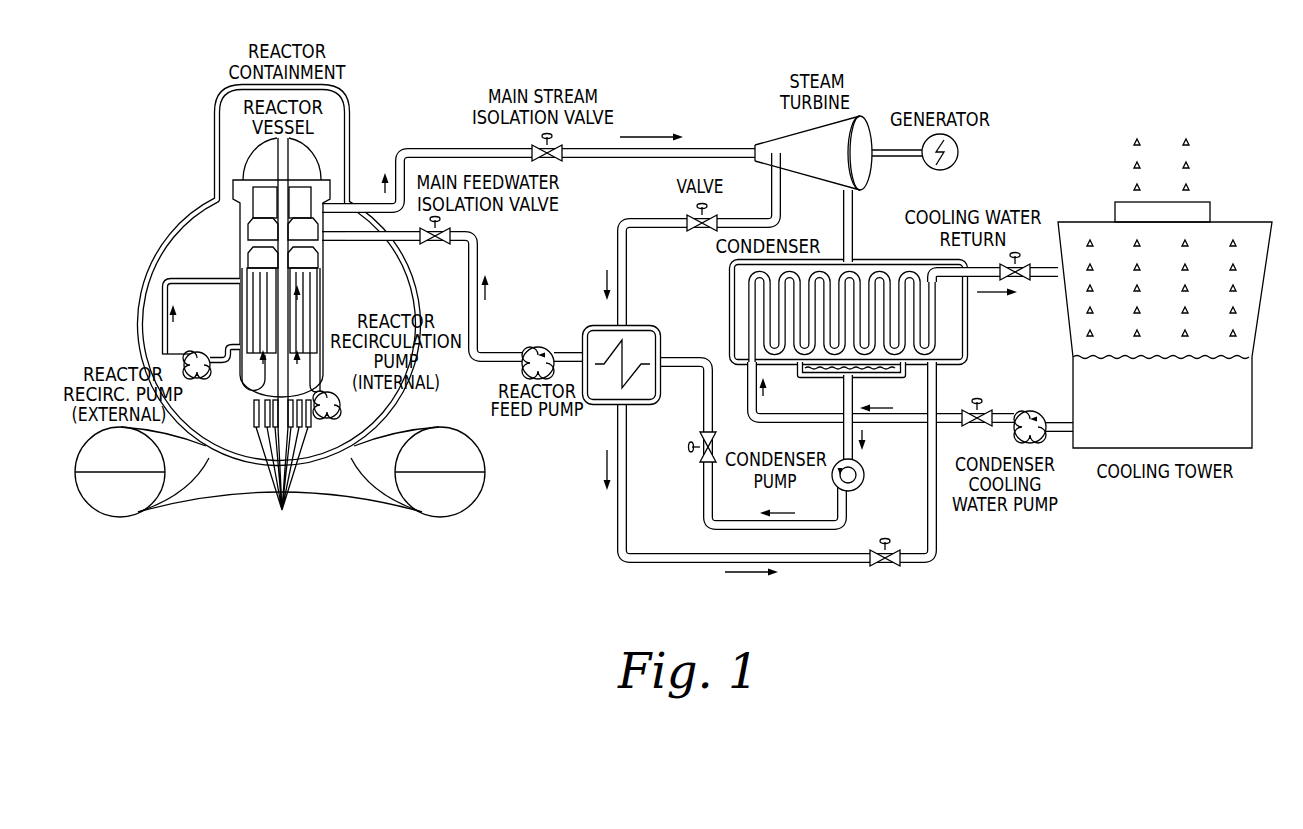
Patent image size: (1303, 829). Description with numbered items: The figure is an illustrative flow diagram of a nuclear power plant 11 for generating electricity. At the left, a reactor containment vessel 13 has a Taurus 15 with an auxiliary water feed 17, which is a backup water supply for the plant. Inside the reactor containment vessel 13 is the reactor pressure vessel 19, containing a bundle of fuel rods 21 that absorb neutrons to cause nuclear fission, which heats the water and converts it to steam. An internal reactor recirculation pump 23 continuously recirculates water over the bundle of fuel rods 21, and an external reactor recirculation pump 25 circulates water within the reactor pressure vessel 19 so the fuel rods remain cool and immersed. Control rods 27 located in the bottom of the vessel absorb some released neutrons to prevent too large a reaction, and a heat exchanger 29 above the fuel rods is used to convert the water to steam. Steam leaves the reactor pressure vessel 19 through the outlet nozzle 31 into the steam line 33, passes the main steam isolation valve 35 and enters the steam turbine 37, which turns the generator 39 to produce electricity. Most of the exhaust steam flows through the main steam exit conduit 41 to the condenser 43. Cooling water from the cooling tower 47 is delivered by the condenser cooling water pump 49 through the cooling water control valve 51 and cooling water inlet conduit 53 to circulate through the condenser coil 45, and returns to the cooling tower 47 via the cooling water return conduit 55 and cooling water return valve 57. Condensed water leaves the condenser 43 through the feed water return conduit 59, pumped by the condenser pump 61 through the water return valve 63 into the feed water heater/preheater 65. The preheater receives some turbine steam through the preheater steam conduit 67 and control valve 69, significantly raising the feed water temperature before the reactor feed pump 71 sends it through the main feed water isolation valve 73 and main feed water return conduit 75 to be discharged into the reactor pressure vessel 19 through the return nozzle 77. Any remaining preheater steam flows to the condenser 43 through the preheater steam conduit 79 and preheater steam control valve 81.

The nuclear power plant 11 is at (1079, 95).
The reactor containment vessel 13 is at (216, 130).
The Taurus 15 is at (109, 507).
The auxiliary water feed 17 is at (437, 508).
The reactor pressure vessel 19 is at (323, 293).
The bundle of fuel rods 21 is at (300, 335).
The internal reactor recirculation pump 23 is at (342, 410).
The external reactor recirculation pump 25 is at (200, 378).
The control rods 27 is at (282, 467).
The heat exchanger 29 is at (250, 228).
The outlet nozzle 31 is at (318, 213).
The steam line 33 is at (453, 148).
The main steam isolation valve 35 is at (553, 160).
The steam turbine 37 is at (834, 162).
The generator 39 is at (961, 152).
The main steam exit conduit 41 is at (855, 210).
The condenser 43 is at (731, 322).
The condenser coil 45 is at (934, 305).
The cooling tower 47 is at (1252, 405).
The condenser cooling water pump 49 is at (1030, 411).
The cooling water control valve 51 is at (981, 410).
The cooling water inlet conduit 53 is at (772, 413).
The cooling water return conduit 55 is at (1047, 265).
The cooling water return valve 57 is at (1020, 290).
The feed water return conduit 59 is at (856, 395).
The condenser pump 61 is at (860, 470).
The water return valve 63 is at (703, 455).
The feed water heater/preheater 65 is at (642, 407).
The preheater steam conduit 67 is at (660, 218).
The control valve 69 is at (700, 232).
The reactor feed pump 71 is at (537, 348).
The main feed water isolation valve 73 is at (438, 247).
The main feed water return conduit 75 is at (478, 268).
The return nozzle 77 is at (322, 243).
The preheater steam conduit 79 is at (685, 563).
The preheater steam control valve 81 is at (880, 568).